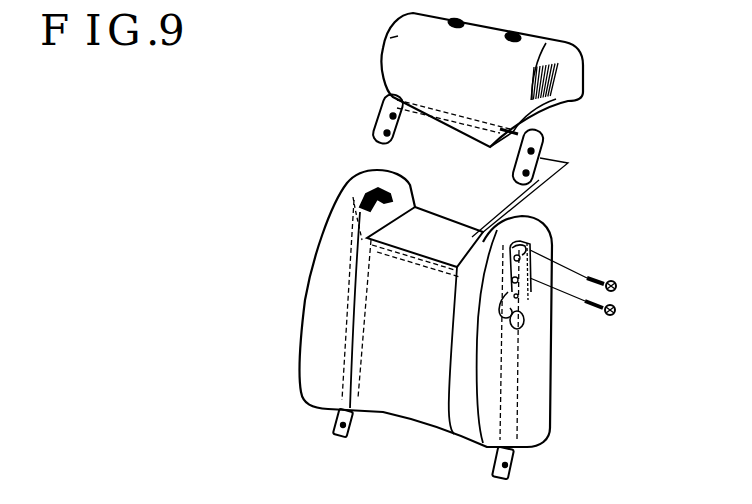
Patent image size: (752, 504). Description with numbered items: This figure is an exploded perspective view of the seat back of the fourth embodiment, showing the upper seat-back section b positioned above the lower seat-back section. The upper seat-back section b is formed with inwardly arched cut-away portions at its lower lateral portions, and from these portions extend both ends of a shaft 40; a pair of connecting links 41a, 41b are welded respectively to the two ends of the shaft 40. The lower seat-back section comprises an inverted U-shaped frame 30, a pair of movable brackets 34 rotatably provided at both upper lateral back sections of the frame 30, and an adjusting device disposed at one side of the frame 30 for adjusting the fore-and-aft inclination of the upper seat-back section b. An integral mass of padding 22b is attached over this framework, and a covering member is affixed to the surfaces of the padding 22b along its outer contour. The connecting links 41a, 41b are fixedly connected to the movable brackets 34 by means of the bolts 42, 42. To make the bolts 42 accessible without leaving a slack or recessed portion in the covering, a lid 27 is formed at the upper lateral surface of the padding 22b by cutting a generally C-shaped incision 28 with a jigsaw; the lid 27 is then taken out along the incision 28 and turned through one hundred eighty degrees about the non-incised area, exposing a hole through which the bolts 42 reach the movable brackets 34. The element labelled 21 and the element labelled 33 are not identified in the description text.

The upper seat-back section b is at (390, 38).
The shaft 40 is at (543, 112).
The connecting link 41a is at (383, 106).
The connecting link 41b is at (541, 148).
The padding 22b is at (397, 403).
The inverted U-shaped frame 30 is at (343, 348).
The hinge plate 21 is at (370, 182).
The C-shaped incision 28 is at (533, 230).
The lid 27 is at (540, 252).
The bolt 42 is at (618, 280).
The movable bracket 34 is at (527, 308).
The retainer ring 33 is at (517, 322).